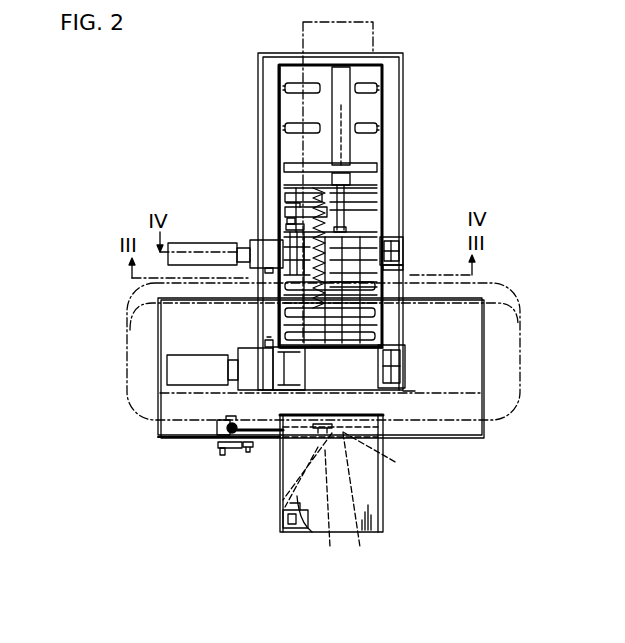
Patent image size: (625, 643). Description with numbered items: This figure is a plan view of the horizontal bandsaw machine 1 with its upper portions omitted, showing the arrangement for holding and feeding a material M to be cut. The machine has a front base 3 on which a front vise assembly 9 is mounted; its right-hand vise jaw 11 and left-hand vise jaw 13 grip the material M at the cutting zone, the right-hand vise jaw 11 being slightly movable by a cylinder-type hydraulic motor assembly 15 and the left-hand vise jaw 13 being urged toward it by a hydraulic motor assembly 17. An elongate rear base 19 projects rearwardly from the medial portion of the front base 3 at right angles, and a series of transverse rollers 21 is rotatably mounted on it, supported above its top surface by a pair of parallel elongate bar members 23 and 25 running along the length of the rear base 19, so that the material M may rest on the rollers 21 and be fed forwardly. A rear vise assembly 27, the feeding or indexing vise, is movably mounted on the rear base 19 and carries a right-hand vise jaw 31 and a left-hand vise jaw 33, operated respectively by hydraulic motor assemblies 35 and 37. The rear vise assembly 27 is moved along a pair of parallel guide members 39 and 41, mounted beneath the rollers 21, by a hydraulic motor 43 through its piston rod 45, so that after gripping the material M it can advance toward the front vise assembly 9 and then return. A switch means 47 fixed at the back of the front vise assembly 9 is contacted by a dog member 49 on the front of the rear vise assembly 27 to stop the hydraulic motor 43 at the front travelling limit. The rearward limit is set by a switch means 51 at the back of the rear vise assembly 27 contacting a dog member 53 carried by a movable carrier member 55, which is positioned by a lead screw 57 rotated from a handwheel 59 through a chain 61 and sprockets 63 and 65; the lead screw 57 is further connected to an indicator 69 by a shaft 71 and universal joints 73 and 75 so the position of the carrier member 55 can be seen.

The material to be cut M is at (376, 36).
The horizontal bandsaw machine 1 is at (407, 447).
The base 3 is at (458, 434).
The front vise assembly 9 is at (230, 395).
The right-hand vise jaw 11 is at (377, 393).
The left-hand vise jaw 13 is at (288, 367).
The hydraulic motor assembly 15 is at (394, 361).
The hydraulic motor assembly 17 is at (202, 364).
The rear base 19 is at (393, 113).
The transverse rollers 21 is at (297, 162).
The elongate bar member 23 is at (383, 90).
The elongate bar member 25 is at (278, 83).
The rear vise assembly 27 is at (248, 237).
The right-hand vise jaw 31 is at (383, 232).
The left-hand vise jaw 33 is at (252, 244).
The hydraulic motor assembly 35 is at (405, 243).
The hydraulic motor assembly 37 is at (195, 240).
The guide member 39 is at (357, 213).
The guide member 41 is at (280, 200).
The hydraulic motor 43 is at (352, 147).
The piston rod 45 is at (362, 163).
The switch means 47 is at (266, 343).
The dog member 49 is at (262, 272).
The switch means 51 is at (290, 220).
The dog member 53 is at (283, 213).
The movable carrier member 55 is at (287, 224).
The lead screw 57 is at (380, 277).
The handwheel 59 is at (228, 452).
The chain 61 is at (272, 432).
The sprocket 63 is at (385, 466).
The sprocket 65 is at (217, 423).
The indicator 69 is at (283, 522).
The shaft 71 is at (315, 503).
The universal joint 73 is at (362, 508).
The universal joint 75 is at (294, 497).